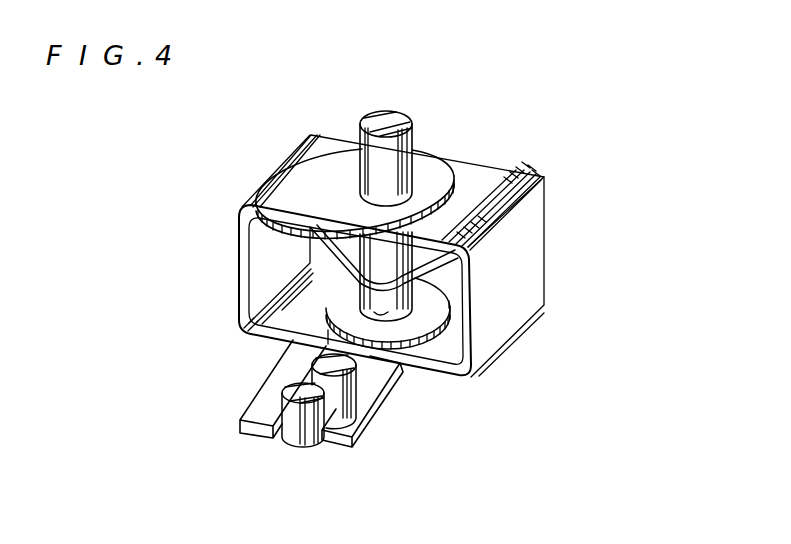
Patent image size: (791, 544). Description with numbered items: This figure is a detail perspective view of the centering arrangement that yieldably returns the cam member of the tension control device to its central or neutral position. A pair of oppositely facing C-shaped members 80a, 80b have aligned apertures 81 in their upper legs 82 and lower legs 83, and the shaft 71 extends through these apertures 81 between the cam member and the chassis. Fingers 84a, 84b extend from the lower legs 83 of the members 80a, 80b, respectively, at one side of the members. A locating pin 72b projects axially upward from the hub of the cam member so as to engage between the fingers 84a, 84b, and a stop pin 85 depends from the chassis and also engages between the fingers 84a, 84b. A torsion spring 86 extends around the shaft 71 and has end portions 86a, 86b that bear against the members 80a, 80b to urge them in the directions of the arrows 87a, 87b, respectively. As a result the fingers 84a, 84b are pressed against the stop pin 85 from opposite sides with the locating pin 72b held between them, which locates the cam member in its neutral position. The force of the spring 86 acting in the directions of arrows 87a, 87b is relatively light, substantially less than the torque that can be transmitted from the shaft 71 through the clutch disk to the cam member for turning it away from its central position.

The shaft 71 is at (413, 143).
The locating pin 72b is at (340, 364).
The C-shaped member 80a is at (295, 199).
The C-shaped member 80b is at (521, 187).
The aperture 81 is at (378, 312).
The upper leg 82 is at (333, 200).
The lower leg 83 is at (270, 337).
The finger 84a is at (263, 408).
The finger 84b is at (350, 416).
The stop pin 85 is at (307, 430).
The torsion spring 86 is at (424, 269).
The end portion 86a is at (312, 240).
The end portion 86b is at (433, 267).
The arrow 87a is at (335, 166).
The arrow 87b is at (473, 170).